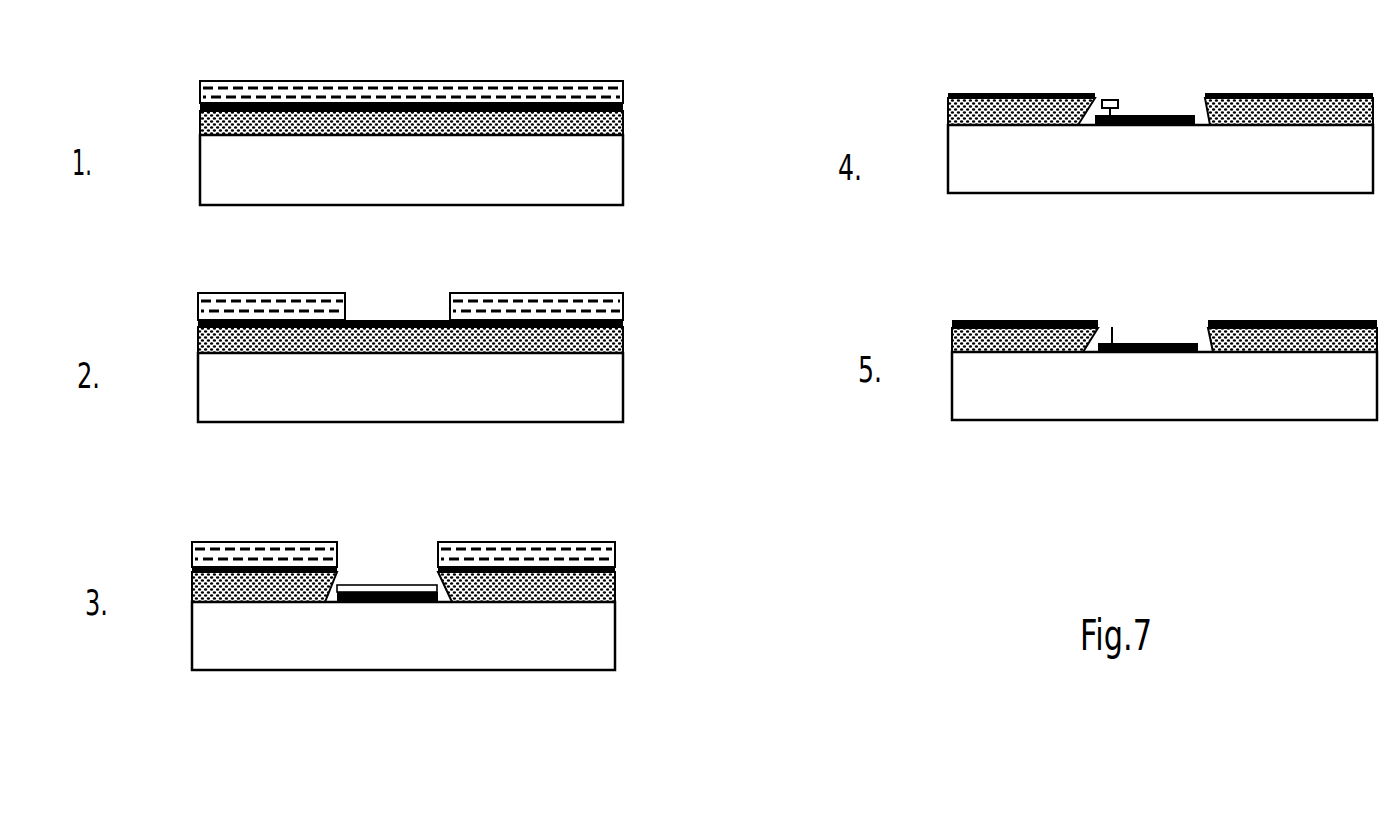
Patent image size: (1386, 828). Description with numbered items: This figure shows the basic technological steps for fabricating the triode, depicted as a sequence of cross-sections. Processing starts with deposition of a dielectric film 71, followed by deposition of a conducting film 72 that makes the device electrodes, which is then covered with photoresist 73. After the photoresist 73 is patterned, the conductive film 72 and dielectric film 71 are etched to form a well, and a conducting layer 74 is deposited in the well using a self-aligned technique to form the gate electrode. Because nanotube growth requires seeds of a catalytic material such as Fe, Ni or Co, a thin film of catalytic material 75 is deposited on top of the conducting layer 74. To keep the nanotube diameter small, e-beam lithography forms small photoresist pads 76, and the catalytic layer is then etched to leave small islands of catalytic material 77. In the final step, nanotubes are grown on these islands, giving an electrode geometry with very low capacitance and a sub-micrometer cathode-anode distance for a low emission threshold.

The dielectric film 71 is at (627, 123).
The conducting film 72 is at (623, 105).
The photoresist 73 is at (530, 85).
The conducting layer 74 is at (367, 600).
The thin film of catalytic material 75 is at (378, 585).
The photoresist pads 76 is at (1118, 97).
The islands of catalytic material 77 is at (1123, 115).